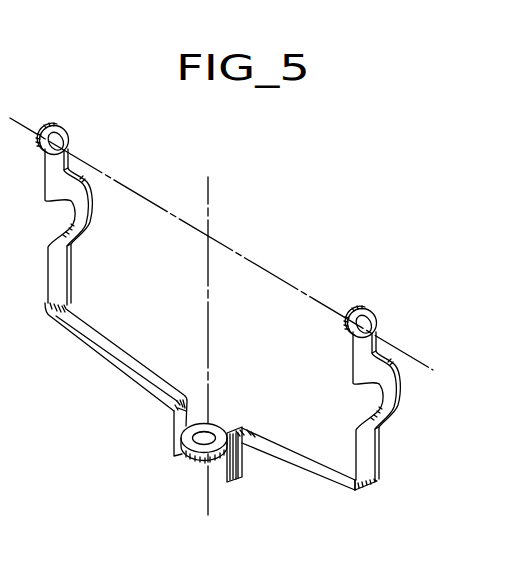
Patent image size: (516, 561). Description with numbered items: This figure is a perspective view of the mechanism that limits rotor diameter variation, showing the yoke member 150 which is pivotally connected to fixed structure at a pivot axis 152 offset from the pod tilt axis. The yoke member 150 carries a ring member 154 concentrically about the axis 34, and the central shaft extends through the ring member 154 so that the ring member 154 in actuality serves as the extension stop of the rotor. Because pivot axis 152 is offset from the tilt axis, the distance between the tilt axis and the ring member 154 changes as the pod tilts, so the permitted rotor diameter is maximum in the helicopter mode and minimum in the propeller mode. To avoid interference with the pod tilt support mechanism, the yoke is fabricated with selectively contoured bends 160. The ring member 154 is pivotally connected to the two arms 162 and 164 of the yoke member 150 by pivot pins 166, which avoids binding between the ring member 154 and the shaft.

The yoke member 150 is at (243, 210).
The pivot axis 152 is at (283, 278).
The axis 34 is at (208, 307).
The selectively contoured bends 160 is at (87, 200).
The arm of yoke 162 is at (130, 362).
The arm of yoke 164 is at (295, 460).
The pivot pins 166 is at (212, 431).
The ring member 154 is at (195, 462).